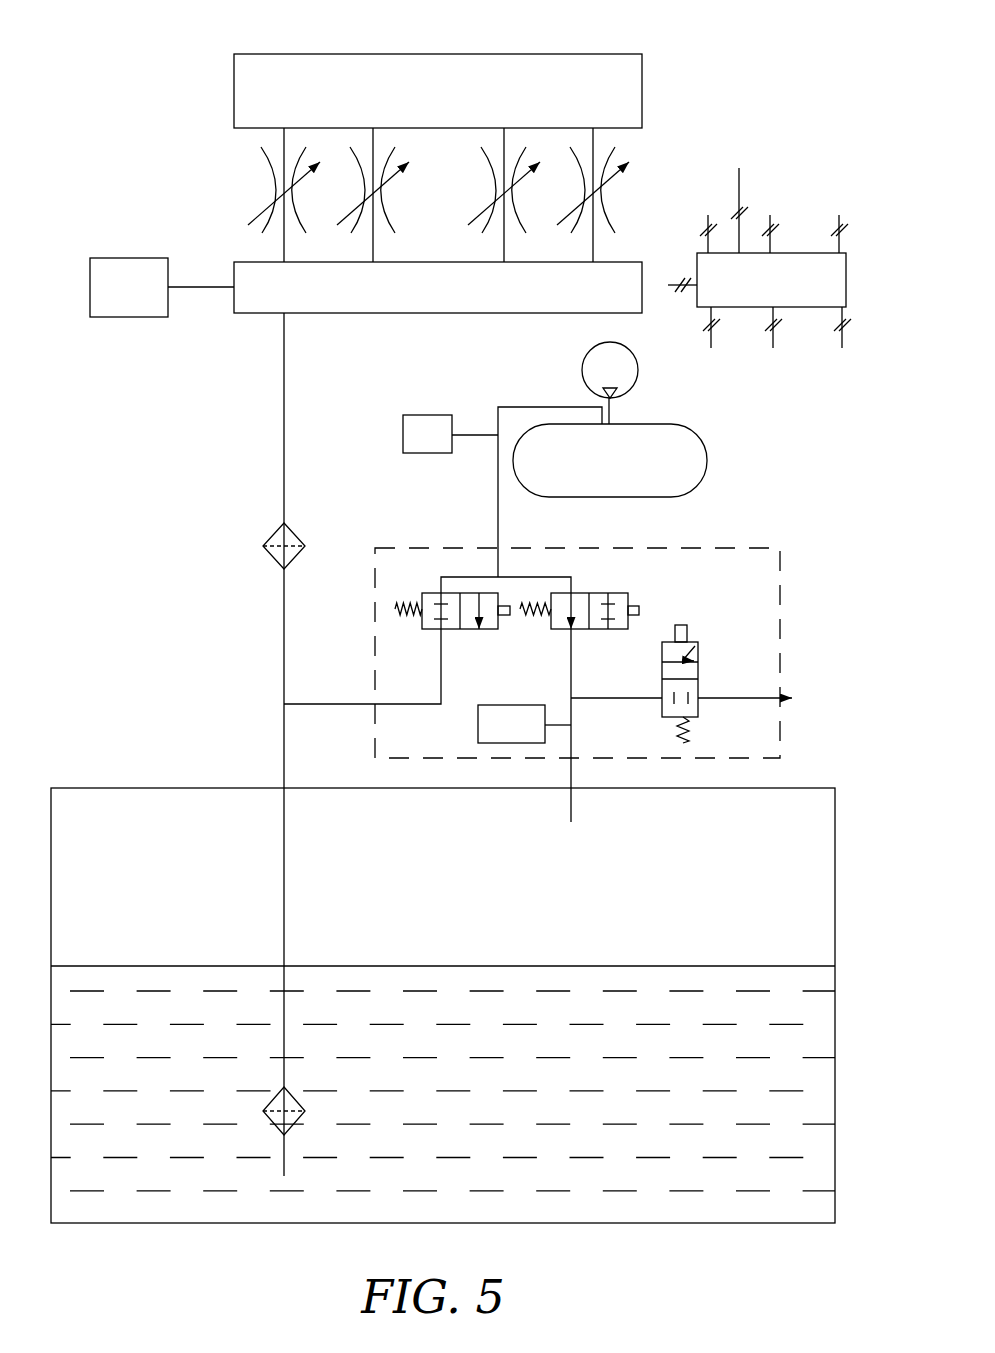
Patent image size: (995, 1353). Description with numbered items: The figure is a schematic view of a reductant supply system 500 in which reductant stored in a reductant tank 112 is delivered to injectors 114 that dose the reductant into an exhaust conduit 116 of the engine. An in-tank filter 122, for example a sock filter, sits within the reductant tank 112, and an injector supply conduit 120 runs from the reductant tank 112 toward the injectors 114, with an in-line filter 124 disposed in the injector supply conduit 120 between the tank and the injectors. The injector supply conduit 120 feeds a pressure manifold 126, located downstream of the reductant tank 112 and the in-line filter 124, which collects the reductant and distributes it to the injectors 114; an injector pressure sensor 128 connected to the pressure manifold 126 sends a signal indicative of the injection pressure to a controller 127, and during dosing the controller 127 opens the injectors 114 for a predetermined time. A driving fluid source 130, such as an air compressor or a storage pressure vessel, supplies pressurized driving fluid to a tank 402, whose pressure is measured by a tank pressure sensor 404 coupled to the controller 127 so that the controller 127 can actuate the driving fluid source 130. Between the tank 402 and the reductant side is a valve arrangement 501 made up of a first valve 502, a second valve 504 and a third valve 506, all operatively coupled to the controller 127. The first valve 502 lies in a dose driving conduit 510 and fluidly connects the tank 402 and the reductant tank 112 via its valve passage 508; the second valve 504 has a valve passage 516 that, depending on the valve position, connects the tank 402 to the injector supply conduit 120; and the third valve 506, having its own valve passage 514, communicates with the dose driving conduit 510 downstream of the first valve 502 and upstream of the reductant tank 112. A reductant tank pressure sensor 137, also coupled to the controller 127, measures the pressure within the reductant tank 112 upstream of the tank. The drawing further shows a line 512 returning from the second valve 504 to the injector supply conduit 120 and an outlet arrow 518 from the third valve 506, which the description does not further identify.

The reductant supply system 500 is at (725, 52).
The exhaust conduit 116 is at (438, 91).
The injector 114 is at (232, 165).
The injector pressure sensor 128 is at (103, 258).
The pressure manifold 126 is at (438, 287).
The controller 127 is at (759, 258).
The first valve 502 is at (621, 592).
The second valve 504 is at (430, 593).
The third valve 506 is at (698, 680).
The reductant tank pressure sensor 137 is at (478, 718).
The tank pressure sensor 404 is at (425, 415).
The driving fluid source 130 is at (582, 358).
The injector supply conduit 120 is at (284, 415).
The tank 402 is at (610, 460).
The valve passage 508 is at (574, 602).
The valve arrangement 501 is at (727, 548).
The valve passage 514 is at (684, 657).
The valve passage 516 is at (482, 613).
The dose driving conduit 510 is at (571, 656).
The return line 512 is at (441, 660).
The in-line filter 124 is at (272, 558).
The outlet flow 518 is at (790, 703).
The in-tank filter 122 is at (293, 1098).
The reductant tank 112 is at (790, 1223).